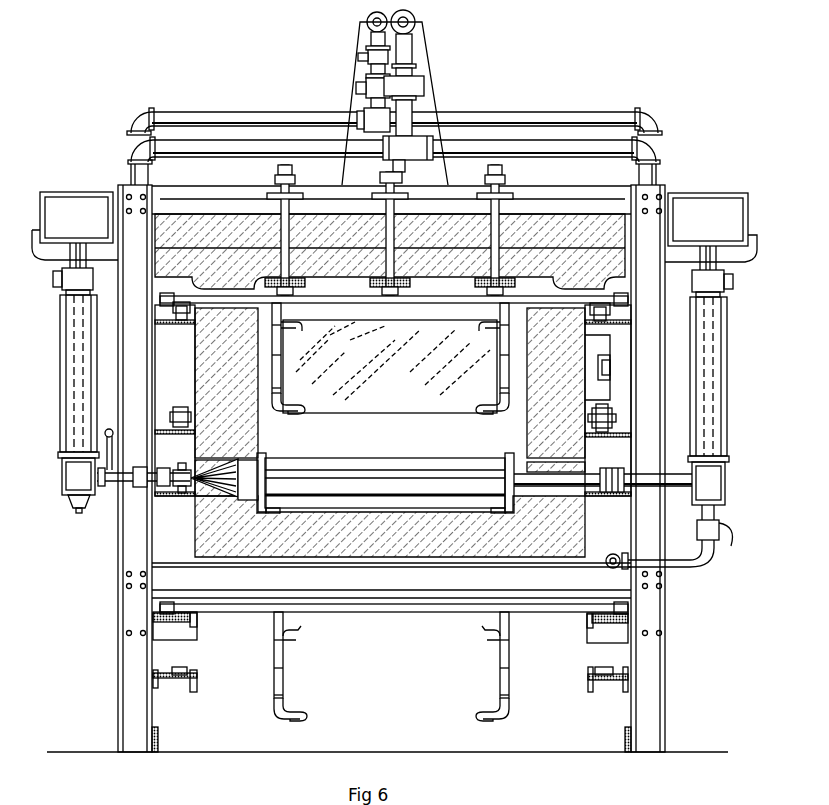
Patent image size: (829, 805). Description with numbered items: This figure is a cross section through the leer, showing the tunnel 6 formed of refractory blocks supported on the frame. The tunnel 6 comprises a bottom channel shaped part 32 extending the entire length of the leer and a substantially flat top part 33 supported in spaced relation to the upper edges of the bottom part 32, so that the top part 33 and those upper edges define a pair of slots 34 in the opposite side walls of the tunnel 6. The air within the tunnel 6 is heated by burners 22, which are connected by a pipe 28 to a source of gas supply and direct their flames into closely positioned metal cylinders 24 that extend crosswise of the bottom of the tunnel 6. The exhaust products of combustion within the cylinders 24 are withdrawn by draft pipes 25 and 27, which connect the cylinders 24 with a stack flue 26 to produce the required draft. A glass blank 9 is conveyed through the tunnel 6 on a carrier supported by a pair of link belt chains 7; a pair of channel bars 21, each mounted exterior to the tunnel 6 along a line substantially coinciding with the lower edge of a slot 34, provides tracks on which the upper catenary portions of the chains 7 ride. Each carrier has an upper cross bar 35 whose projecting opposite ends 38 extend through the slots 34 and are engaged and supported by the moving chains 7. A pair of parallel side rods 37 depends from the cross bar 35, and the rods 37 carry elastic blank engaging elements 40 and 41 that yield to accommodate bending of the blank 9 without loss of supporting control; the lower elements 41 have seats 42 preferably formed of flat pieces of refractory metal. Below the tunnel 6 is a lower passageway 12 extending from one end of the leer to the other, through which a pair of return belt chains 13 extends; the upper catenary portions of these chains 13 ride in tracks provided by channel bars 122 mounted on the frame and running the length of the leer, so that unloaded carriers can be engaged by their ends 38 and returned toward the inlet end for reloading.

The tunnel 6 is at (600, 400).
The link belt chains 7 is at (615, 418).
The glass blank 9 is at (383, 397).
The lower passageway 12 is at (443, 727).
The return belt chains 13 is at (163, 671).
The channel bars 21 is at (180, 335).
The burners 22 is at (187, 493).
The metal cylinders 24 is at (336, 470).
The draft pipe 25 is at (727, 273).
The stack flue 26 is at (78, 208).
The draft pipe 27 is at (630, 493).
The gas supply pipe 28 is at (104, 433).
The bottom channel shaped part 32 is at (375, 537).
The top part 33 is at (503, 198).
The slots 34 is at (218, 290).
The upper cross bar 35 is at (395, 303).
The side rods 37 is at (492, 388).
The projecting ends 38 is at (635, 300).
The elastic blank engaging elements 40 is at (300, 325).
The lower blank engaging elements 41 is at (277, 411).
The seats 42 is at (290, 414).
The channel bars 122 is at (195, 630).